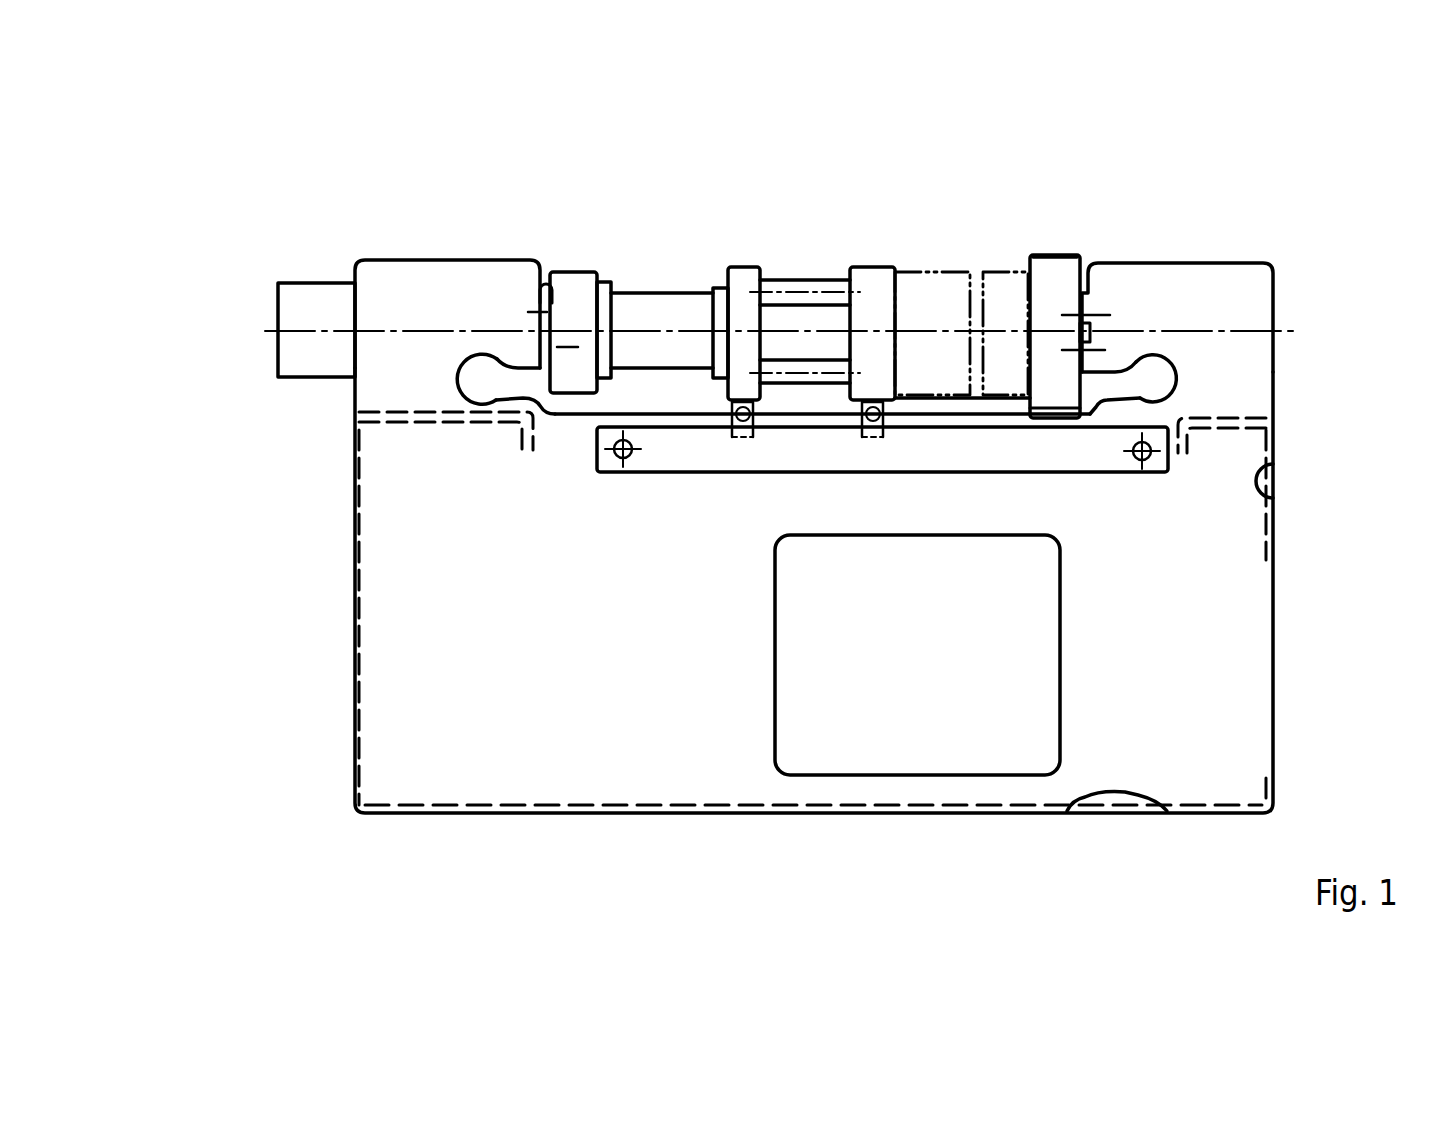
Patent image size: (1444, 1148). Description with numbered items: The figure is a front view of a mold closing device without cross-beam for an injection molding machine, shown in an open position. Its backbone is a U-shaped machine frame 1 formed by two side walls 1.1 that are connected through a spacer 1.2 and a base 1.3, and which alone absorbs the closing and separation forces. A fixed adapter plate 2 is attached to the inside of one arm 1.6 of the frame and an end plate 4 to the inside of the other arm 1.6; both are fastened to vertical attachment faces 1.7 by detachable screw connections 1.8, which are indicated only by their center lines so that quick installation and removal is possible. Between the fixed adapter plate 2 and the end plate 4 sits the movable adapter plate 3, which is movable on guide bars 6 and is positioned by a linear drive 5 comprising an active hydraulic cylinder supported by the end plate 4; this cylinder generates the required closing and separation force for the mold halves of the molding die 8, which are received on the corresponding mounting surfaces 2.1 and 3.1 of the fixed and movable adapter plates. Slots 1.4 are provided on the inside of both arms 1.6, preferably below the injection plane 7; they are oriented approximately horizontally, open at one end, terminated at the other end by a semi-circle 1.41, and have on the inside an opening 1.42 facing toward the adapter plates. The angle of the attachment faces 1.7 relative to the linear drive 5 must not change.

The machine frame 1 is at (1275, 692).
The side walls 1.1 is at (582, 752).
The spacer 1.2 is at (1277, 488).
The base 1.3 is at (1125, 812).
The slots 1.4 is at (777, 520).
The semi-circle 1.41 is at (458, 383).
The opening 1.42 is at (527, 397).
The arms 1.6 is at (472, 258).
The attachment faces 1.7 is at (545, 352).
The screw connections 1.8 is at (570, 348).
The fixed adapter plate 2 is at (1097, 312).
The mounting surface 2.1 is at (1050, 277).
The movable adapter plate 3 is at (863, 277).
The mounting surface 3.1 is at (900, 285).
The end plate 4 is at (570, 290).
The linear drive 5 is at (305, 305).
The guide bars 6 is at (690, 452).
The injection plane 7 is at (1290, 332).
The molding die 8 is at (1015, 302).